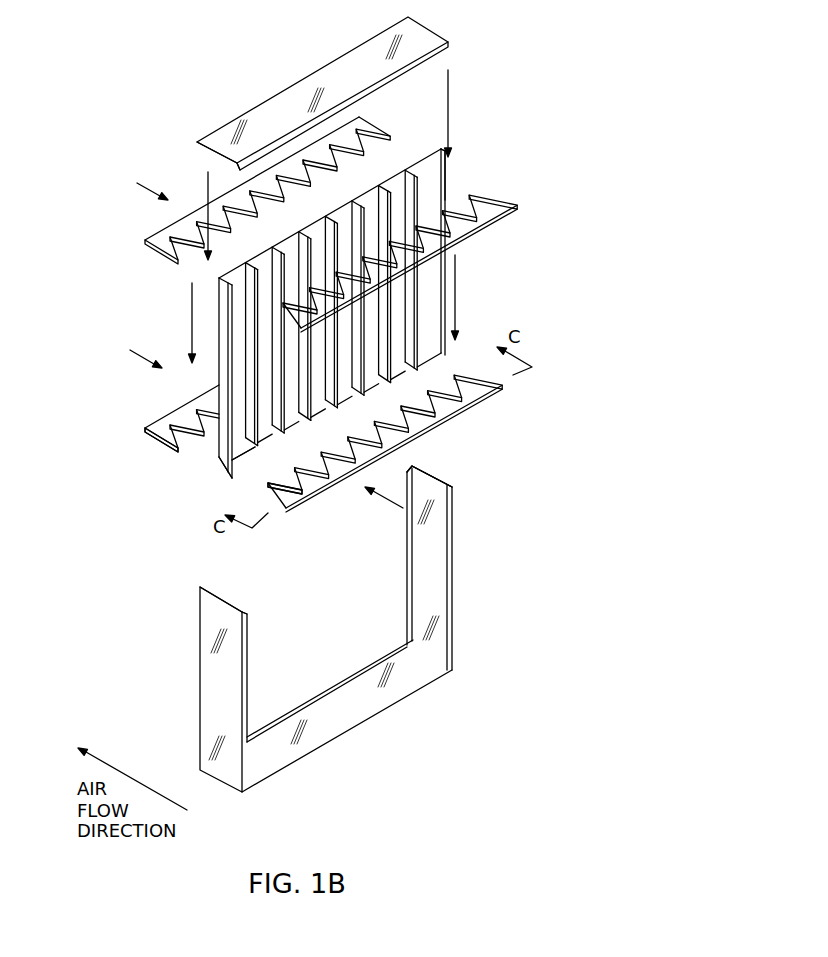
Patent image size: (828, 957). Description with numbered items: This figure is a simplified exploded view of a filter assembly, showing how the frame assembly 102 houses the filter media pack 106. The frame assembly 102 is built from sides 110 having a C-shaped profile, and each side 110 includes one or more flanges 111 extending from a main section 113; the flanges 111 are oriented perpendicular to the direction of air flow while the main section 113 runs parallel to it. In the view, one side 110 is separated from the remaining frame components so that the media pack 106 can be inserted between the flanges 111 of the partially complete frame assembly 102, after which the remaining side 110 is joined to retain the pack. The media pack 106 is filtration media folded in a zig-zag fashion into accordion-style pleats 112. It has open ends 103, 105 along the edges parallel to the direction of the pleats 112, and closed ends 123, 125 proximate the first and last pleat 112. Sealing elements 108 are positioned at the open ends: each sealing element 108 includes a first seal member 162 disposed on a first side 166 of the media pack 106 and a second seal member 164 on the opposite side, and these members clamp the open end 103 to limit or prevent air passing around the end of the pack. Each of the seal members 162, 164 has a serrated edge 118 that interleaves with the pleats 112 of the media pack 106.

The frame assembly 102 is at (461, 555).
The first open end 103 is at (232, 485).
The open end 105 is at (442, 172).
The filter media pack 106 is at (211, 382).
The sealing element 108 is at (331, 339).
The side 110 is at (275, 110).
The flange 111 is at (215, 150).
The pleat 112 is at (307, 322).
The main section 113 is at (233, 164).
The serrated edge 118 is at (172, 438).
The closed end 123 is at (217, 460).
The closed end 125 is at (440, 192).
The first seal member 162 is at (478, 387).
The second seal member 164 is at (160, 448).
The first side 166 is at (428, 318).